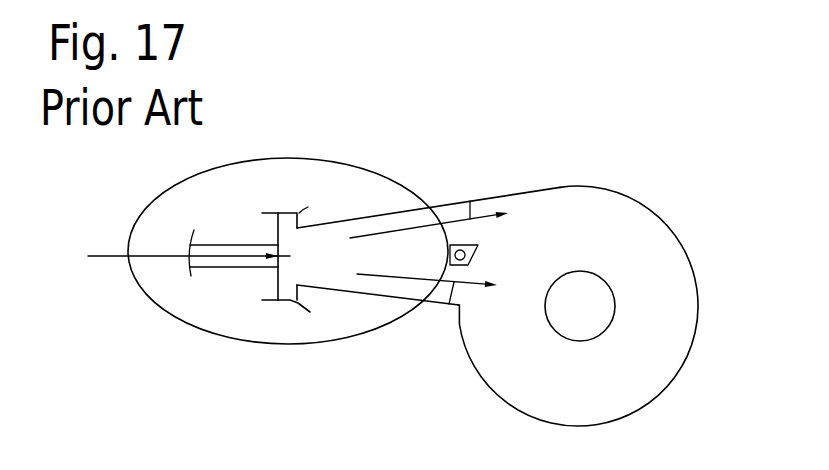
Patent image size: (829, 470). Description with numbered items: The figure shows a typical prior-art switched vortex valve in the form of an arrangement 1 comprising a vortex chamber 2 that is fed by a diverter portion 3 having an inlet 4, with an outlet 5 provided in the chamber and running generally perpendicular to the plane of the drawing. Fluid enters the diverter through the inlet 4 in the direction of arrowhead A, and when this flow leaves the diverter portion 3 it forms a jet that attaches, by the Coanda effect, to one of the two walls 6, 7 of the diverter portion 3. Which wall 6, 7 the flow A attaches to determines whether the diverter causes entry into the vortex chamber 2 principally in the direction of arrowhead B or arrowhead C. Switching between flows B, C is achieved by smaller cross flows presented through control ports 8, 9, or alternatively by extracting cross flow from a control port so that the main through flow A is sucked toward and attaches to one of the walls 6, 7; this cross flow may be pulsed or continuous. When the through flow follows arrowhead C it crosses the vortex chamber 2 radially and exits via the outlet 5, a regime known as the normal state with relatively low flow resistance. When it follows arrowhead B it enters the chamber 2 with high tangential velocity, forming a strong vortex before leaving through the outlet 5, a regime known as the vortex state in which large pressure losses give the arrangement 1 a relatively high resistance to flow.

The arrangement 1 is at (712, 229).
The vortex chamber 2 is at (583, 201).
The diverter portion 3 is at (378, 170).
The inlet 4 is at (227, 245).
The outlet 5 is at (582, 340).
The wall 6 is at (405, 209).
The wall 7 is at (405, 302).
The control port 8 is at (294, 306).
The control port 9 is at (287, 212).
The inlet flow direction A is at (127, 256).
The tangential flow direction B is at (470, 201).
The radial flow direction C is at (449, 304).